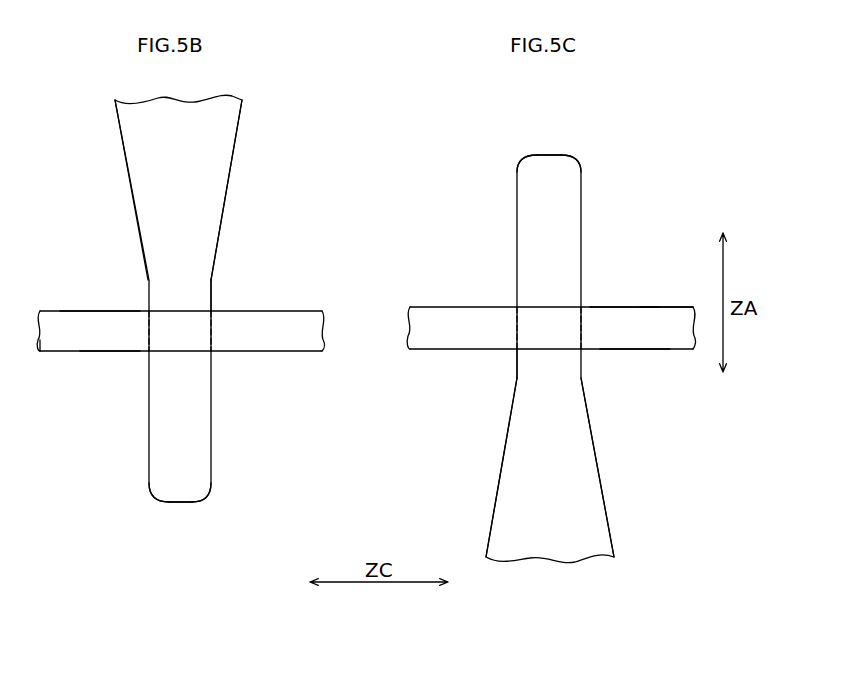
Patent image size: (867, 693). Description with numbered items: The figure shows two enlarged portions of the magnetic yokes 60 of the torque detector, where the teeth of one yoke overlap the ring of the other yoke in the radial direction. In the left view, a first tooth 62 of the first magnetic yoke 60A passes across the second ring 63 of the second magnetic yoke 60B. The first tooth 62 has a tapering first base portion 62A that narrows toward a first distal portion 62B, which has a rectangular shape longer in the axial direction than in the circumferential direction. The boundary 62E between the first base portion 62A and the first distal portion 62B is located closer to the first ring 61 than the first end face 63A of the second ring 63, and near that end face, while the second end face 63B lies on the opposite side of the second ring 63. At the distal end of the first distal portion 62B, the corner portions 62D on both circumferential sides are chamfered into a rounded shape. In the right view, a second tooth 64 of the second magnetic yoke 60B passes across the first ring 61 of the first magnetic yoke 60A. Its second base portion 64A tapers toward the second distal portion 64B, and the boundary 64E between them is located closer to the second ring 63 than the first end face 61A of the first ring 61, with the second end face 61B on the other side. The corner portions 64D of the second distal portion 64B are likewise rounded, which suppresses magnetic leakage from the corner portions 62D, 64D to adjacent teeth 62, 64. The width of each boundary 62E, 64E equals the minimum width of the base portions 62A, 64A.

In FIG. 5B, the magnetic yokes 60 is at (98, 94).
In FIG. 5C, the magnetic yokes 60 is at (479, 113).
In FIG. 5B, the first magnetic yoke 60A is at (252, 171).
In FIG. 5C, the first magnetic yoke 60A is at (680, 272).
In FIG. 5B, the second magnetic yoke 60B is at (44, 373).
In FIG. 5C, the second magnetic yoke 60B is at (479, 482).
In FIG. 5C, the first ring 61 is at (460, 307).
In FIG. 5C, the first end face of the first ring 61A is at (632, 350).
In FIG. 5C, the second end face of the first ring 61B is at (612, 307).
In FIG. 5B, the first teeth 62 is at (240, 403).
In FIG. 5B, the first base portion 62A is at (140, 175).
In FIG. 5B, the first distal portion 62B is at (180, 497).
In FIG. 5B, the corner portions 62D is at (155, 500).
In FIG. 5B, the boundary 62E is at (182, 283).
In FIG. 5B, the second ring 63 is at (70, 352).
In FIG. 5B, the first end face of the second ring 63A is at (97, 309).
In FIG. 5B, the second end face of the second ring 63B is at (120, 352).
In FIG. 5C, the second teeth 64 is at (491, 252).
In FIG. 5C, the second base portion 64A is at (590, 478).
In FIG. 5C, the second distal portion 64B is at (555, 162).
In FIG. 5C, the corner portions 64D is at (525, 157).
In FIG. 5C, the boundary 64E is at (543, 373).